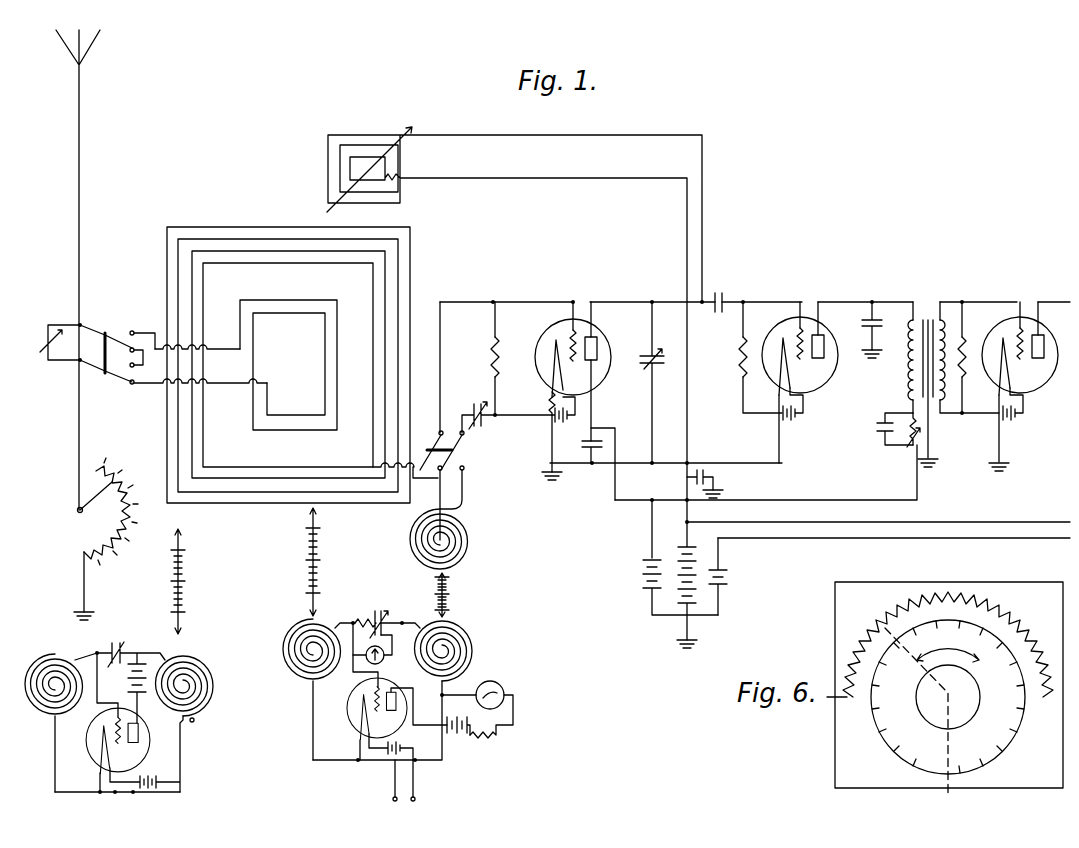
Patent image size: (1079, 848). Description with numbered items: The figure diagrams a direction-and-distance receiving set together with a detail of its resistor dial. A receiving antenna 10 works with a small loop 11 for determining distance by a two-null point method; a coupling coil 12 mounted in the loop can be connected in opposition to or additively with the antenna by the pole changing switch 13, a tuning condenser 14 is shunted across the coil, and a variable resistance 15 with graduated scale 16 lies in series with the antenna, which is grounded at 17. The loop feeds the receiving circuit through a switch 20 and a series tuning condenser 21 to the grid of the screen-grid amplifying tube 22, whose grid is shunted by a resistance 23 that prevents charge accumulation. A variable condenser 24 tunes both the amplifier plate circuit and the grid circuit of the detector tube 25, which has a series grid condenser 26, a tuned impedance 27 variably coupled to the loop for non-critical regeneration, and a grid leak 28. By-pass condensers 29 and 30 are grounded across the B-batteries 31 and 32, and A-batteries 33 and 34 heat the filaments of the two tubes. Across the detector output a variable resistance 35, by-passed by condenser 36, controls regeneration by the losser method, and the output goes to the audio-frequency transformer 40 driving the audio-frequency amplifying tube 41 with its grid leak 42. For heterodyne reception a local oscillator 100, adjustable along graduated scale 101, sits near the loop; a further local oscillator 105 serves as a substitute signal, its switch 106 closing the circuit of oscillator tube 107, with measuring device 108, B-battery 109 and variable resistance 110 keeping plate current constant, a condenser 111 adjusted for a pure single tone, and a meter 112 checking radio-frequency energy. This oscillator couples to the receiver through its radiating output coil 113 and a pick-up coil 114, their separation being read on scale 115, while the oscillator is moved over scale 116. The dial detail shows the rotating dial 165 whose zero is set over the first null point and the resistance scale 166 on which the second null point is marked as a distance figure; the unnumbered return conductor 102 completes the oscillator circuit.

In FIG. 1, the receiving antenna 10 is at (87, 122).
In FIG. 1, the loop 11 is at (233, 238).
In FIG. 1, the coupling coil 12 is at (286, 307).
In FIG. 1, the pole changing switch 13 is at (104, 376).
In FIG. 1, the tuning condenser 14 is at (64, 341).
In FIG. 1, the variable resistance 15 is at (138, 512).
In FIG. 6, the variable resistance 15 is at (1005, 616).
In FIG. 1, the graduated scale 16 is at (120, 512).
In FIG. 1, the ground 17 is at (90, 612).
In FIG. 1, the switch 20 is at (456, 448).
In FIG. 1, the tuning condenser 21 is at (478, 410).
In FIG. 1, the screen-grid amplifying tube 22 is at (548, 378).
In FIG. 1, the resistance 23 is at (499, 356).
In FIG. 1, the variable condenser 24 is at (646, 382).
In FIG. 1, the detector tube 25 is at (780, 383).
In FIG. 1, the series grid condenser 26 is at (719, 294).
In FIG. 1, the tuned impedance 27 is at (328, 160).
In FIG. 1, the grid leak 28 is at (739, 355).
In FIG. 1, the by-pass condenser 29 is at (582, 444).
In FIG. 1, the by-pass condenser 30 is at (714, 474).
In FIG. 1, the B-battery 31 is at (643, 562).
In FIG. 1, the B-battery 32 is at (678, 556).
In FIG. 1, the A-battery 33 is at (553, 419).
In FIG. 1, the A-battery 34 is at (797, 418).
In FIG. 1, the variable resistance 35 is at (908, 449).
In FIG. 1, the condenser 36 is at (878, 427).
In FIG. 1, the audio-frequency transformer 40 is at (927, 318).
In FIG. 1, the audio-frequency amplifying tube 41 is at (1032, 391).
In FIG. 1, the grid leak 42 is at (966, 341).
In FIG. 1, the local oscillator 100 is at (193, 723).
In FIG. 1, the graduated scale 101 is at (190, 573).
In FIG. 1, the return conductor 102 is at (124, 796).
In FIG. 1, the local oscillator 105 is at (481, 665).
In FIG. 1, the switch 106 is at (393, 797).
In FIG. 1, the oscillator tube 107 is at (348, 722).
In FIG. 1, the measuring device 108 is at (505, 692).
In FIG. 1, the B-battery 109 is at (457, 736).
In FIG. 1, the variable resistance 110 is at (490, 739).
In FIG. 1, the condenser 111 is at (362, 617).
In FIG. 1, the meter 112 is at (383, 641).
In FIG. 1, the radiating output coil 113 is at (474, 643).
In FIG. 1, the pick-up coil 114 is at (471, 548).
In FIG. 1, the scale 115 is at (456, 597).
In FIG. 1, the scale 116 is at (326, 552).
In FIG. 6, the rotating dial 165 is at (1023, 722).
In FIG. 6, the resistance scale 166 is at (890, 741).